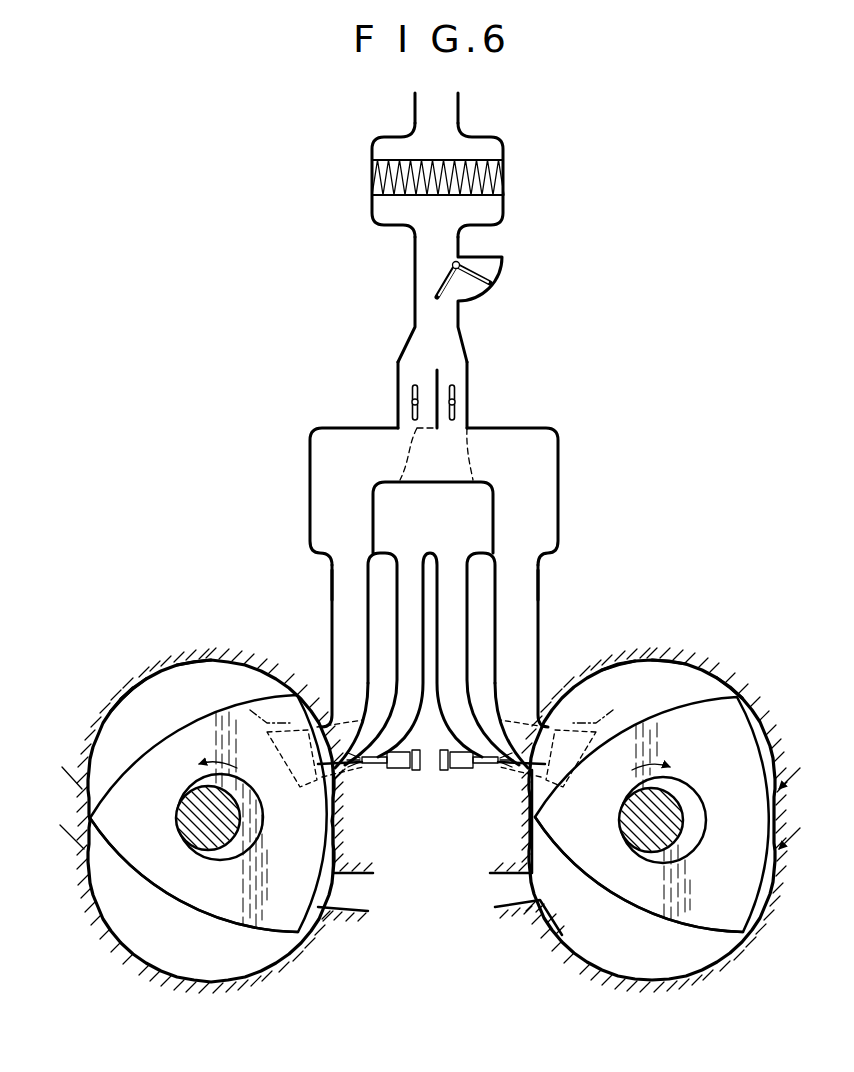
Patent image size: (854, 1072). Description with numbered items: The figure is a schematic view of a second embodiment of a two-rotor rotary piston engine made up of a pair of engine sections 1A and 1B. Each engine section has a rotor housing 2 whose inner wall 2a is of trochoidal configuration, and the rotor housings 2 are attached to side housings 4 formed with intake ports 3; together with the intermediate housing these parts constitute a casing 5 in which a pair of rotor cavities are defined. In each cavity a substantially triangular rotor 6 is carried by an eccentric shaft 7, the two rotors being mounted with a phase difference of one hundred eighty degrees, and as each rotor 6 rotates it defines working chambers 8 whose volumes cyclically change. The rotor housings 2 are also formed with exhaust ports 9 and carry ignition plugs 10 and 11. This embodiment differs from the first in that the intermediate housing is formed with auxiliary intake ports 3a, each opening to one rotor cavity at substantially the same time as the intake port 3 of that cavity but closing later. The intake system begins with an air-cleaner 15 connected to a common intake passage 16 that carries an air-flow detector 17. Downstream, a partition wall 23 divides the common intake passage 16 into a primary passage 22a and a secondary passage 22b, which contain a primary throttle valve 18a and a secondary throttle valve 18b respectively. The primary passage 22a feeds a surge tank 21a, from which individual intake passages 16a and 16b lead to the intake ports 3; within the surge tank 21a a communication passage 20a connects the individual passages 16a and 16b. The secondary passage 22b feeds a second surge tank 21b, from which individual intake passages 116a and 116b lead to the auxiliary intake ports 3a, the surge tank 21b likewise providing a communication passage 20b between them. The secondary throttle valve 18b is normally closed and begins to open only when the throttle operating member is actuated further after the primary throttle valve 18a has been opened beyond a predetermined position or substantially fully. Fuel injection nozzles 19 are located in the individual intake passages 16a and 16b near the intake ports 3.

The engine section 1A is at (163, 634).
The engine section 1B is at (699, 638).
The rotor housing 2 is at (713, 685).
The inner wall 2a is at (733, 683).
The intake port 3 is at (562, 687).
The auxiliary intake port 3a is at (580, 717).
The side housing 4 is at (662, 673).
The casing 5 is at (129, 684).
The rotor 6 is at (738, 725).
The eccentric shaft 7 is at (638, 840).
The working chamber 8 is at (609, 944).
The exhaust port 9 is at (494, 897).
The ignition plug 10 is at (800, 828).
The ignition plug 11 is at (800, 768).
The air-cleaner 15 is at (505, 180).
The common intake passage 16 is at (443, 327).
The individual intake passage 16a is at (395, 617).
The individual intake passage 16b is at (452, 617).
The air-flow detector 17 is at (482, 276).
The primary throttle valve 18a is at (456, 390).
The secondary throttle valve 18b is at (408, 390).
The fuel injection nozzle 19 is at (467, 790).
The communication passage 20a is at (430, 553).
The central intake chamber 20b is at (427, 468).
The surge tank 21a is at (468, 518).
The surge tank 21b is at (322, 480).
The primary passage 22a is at (460, 418).
The secondary passage 22b is at (405, 417).
The partition wall 23 is at (433, 370).
The individual intake passage 116a is at (343, 585).
The individual intake passage 116b is at (520, 572).